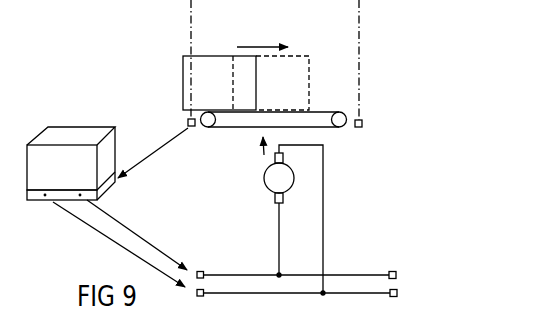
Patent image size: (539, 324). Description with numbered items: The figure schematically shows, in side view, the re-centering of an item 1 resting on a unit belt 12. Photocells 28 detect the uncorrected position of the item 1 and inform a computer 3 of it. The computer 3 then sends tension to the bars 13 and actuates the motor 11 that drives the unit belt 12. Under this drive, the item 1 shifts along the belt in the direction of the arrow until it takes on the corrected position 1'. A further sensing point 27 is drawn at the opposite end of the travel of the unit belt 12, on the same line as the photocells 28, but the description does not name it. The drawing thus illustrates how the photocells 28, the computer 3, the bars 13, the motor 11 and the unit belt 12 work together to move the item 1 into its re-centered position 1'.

The item 1 is at (219, 57).
The position of the item after shifting 1' is at (289, 57).
The computer 3 is at (70, 127).
The motor 11 is at (290, 190).
The unit belt 12 is at (330, 128).
The bars 13 is at (398, 292).
The end position sensor 27 is at (363, 120).
The photocells 28 is at (193, 127).